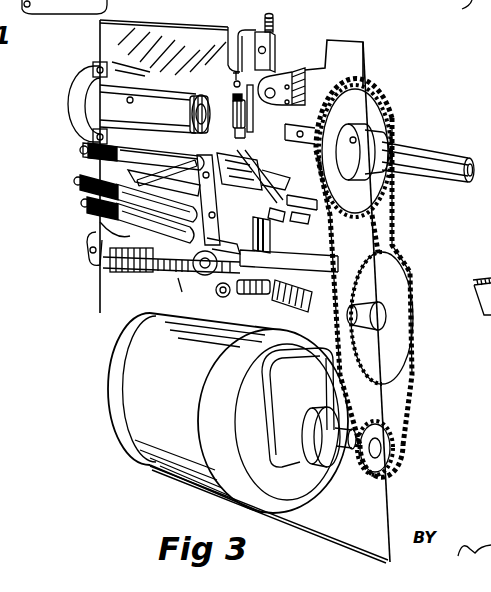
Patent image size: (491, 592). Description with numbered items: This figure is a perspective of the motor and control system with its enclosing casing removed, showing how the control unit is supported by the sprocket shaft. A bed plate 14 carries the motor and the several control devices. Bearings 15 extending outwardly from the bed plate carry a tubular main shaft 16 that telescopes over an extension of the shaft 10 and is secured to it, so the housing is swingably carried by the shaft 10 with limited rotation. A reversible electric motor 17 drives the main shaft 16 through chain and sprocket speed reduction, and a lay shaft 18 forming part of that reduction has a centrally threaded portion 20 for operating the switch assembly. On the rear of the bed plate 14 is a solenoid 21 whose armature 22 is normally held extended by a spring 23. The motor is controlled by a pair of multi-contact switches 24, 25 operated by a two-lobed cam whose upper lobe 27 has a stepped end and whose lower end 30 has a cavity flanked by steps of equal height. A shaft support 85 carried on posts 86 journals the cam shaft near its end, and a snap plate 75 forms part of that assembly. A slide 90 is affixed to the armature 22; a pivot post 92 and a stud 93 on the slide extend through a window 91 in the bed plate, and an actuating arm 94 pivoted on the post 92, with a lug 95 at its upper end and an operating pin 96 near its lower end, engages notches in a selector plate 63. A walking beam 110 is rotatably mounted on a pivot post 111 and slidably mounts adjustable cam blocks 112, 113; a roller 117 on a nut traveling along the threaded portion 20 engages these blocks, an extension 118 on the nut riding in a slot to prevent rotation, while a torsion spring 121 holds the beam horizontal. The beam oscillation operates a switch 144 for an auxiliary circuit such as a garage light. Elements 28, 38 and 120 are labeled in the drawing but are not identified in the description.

The shaft 10 is at (428, 180).
The bed plate 14 is at (106, 47).
The bearings 15 is at (80, 116).
The tubular main shaft 16 is at (152, 95).
The reversible electric motor 17 is at (130, 410).
The lay shaft 18 is at (88, 262).
The centrally threaded portion 20 is at (188, 276).
The solenoid 21 is at (291, 78).
The armature 22 is at (275, 55).
The spring 23 is at (275, 30).
The multi-contact switch 24 is at (82, 160).
The multi-contact switch 25 is at (79, 196).
The upper lobe 27 is at (194, 151).
The lever 28 is at (200, 182).
The lower end 30 is at (218, 204).
The lever (adjacent figure) 38 is at (457, 11).
The selector plate 63 is at (282, 175).
The snap plate 75 is at (305, 197).
The shaft support 85 is at (280, 216).
The posts 86 is at (300, 218).
The slide 90 is at (249, 32).
The window 91 is at (254, 117).
The pivot post 92 is at (233, 98).
The stud 93 is at (234, 78).
The actuating arm 94 is at (234, 115).
The lug 95 is at (233, 86).
The operating pin 96 is at (247, 133).
The walking beam 110 is at (220, 297).
The pivot post 111 is at (196, 288).
The cam block 112 is at (290, 311).
The cam block 113 is at (120, 272).
The roller 117 is at (248, 296).
The extension 118 is at (290, 261).
The roller 120 is at (148, 272).
The torsion spring 121 is at (272, 240).
The switch 144 is at (85, 218).